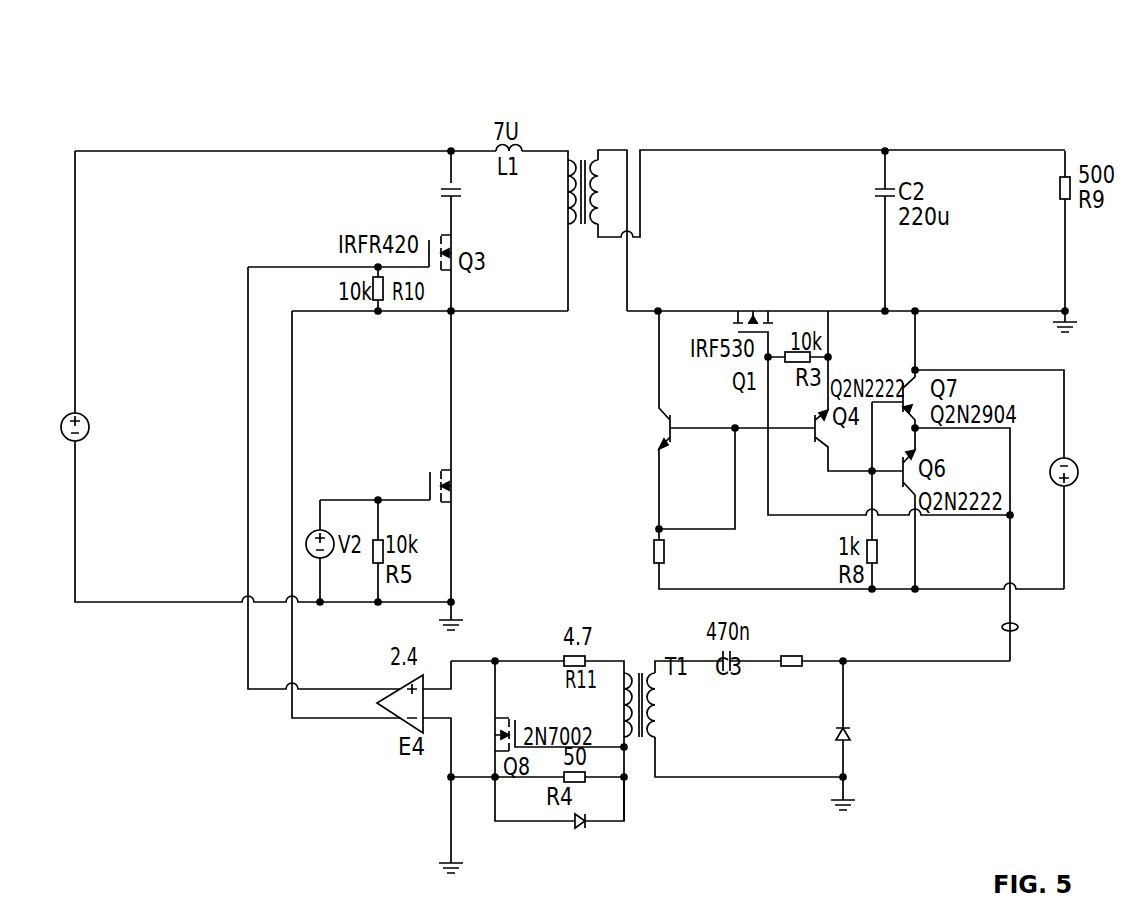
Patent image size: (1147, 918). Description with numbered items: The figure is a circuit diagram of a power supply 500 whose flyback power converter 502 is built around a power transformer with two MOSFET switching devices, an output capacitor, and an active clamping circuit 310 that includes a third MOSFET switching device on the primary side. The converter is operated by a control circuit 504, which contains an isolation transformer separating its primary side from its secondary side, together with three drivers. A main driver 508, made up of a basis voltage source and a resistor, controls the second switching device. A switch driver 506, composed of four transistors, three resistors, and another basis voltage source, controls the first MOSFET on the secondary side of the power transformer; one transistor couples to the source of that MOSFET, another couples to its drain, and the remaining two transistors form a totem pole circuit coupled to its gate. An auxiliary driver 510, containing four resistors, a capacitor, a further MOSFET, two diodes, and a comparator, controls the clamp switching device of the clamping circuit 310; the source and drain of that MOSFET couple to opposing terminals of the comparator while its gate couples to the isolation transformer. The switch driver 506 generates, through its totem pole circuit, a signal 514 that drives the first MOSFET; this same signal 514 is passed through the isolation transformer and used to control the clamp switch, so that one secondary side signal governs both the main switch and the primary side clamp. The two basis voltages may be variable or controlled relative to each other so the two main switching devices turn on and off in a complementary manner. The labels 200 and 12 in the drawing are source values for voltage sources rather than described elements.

The power supply 500 is at (114, 99).
The flyback power converter 502 is at (584, 141).
The active clamping circuit 310 is at (424, 193).
The main driver 508 is at (338, 476).
The switch driver 506 is at (645, 503).
The signal 514 is at (1018, 626).
The control circuit 504 is at (942, 699).
The auxiliary driver 510 is at (577, 871).
The voltage source V4 200 is at (93, 439).
The voltage source V3 12 is at (1082, 517).